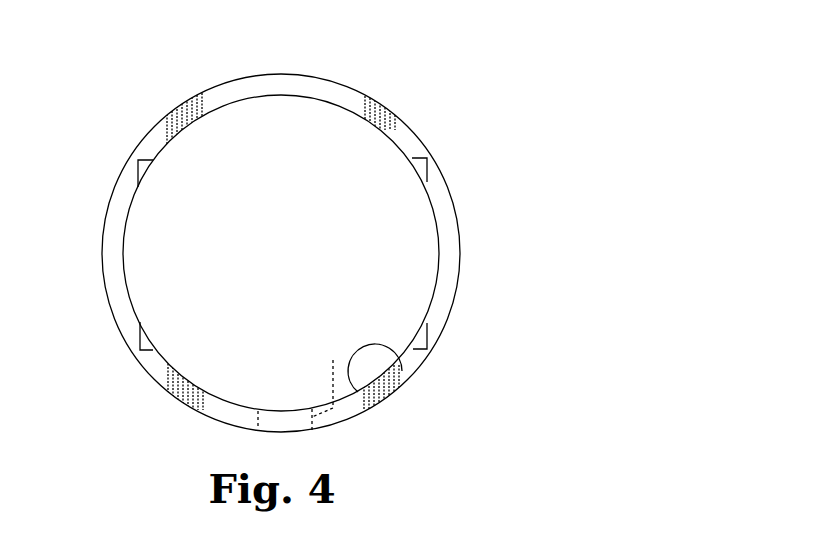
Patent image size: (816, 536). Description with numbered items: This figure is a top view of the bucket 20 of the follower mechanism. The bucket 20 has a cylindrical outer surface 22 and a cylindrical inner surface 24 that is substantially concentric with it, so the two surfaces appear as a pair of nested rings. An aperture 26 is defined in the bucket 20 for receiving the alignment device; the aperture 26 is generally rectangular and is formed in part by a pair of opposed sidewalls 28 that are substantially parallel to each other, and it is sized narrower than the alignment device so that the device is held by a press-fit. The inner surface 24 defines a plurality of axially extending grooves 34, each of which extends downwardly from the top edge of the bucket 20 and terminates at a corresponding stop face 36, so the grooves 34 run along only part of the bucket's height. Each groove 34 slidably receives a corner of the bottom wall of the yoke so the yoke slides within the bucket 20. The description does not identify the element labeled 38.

The bucket 20 is at (431, 94).
The cylindrical outer surface 22 is at (203, 97).
The cylindrical inner surface 24 is at (385, 358).
The aperture 26 is at (292, 431).
The opposed sidewalls 28 is at (176, 434).
The axially extending grooves 34 is at (156, 183).
The stop face 36 is at (150, 316).
The bracket 38 is at (414, 162).